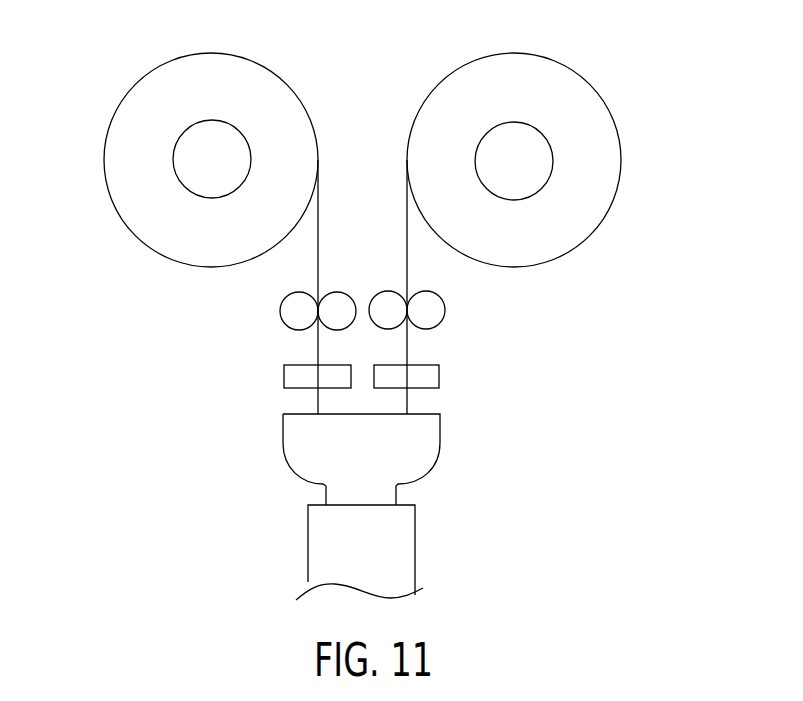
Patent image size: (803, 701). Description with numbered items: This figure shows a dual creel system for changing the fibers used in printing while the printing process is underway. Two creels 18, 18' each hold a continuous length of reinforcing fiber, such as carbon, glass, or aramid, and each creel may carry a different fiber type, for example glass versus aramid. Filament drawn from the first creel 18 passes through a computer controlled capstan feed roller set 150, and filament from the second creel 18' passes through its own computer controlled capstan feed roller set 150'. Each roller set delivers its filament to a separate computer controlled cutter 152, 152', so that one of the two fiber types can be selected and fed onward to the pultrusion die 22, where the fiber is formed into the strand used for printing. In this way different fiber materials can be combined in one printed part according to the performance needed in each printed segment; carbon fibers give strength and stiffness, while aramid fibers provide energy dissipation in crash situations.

The creel 18 is at (178, 142).
The creel 18' is at (551, 142).
The computer controlled capstan feed roller set 150 is at (265, 306).
The computer controlled capstan feed roller set 150' is at (462, 306).
The computer controlled cutter 152 is at (267, 386).
The computer controlled cutter 152' is at (460, 386).
The pultrusion die 22 is at (442, 523).